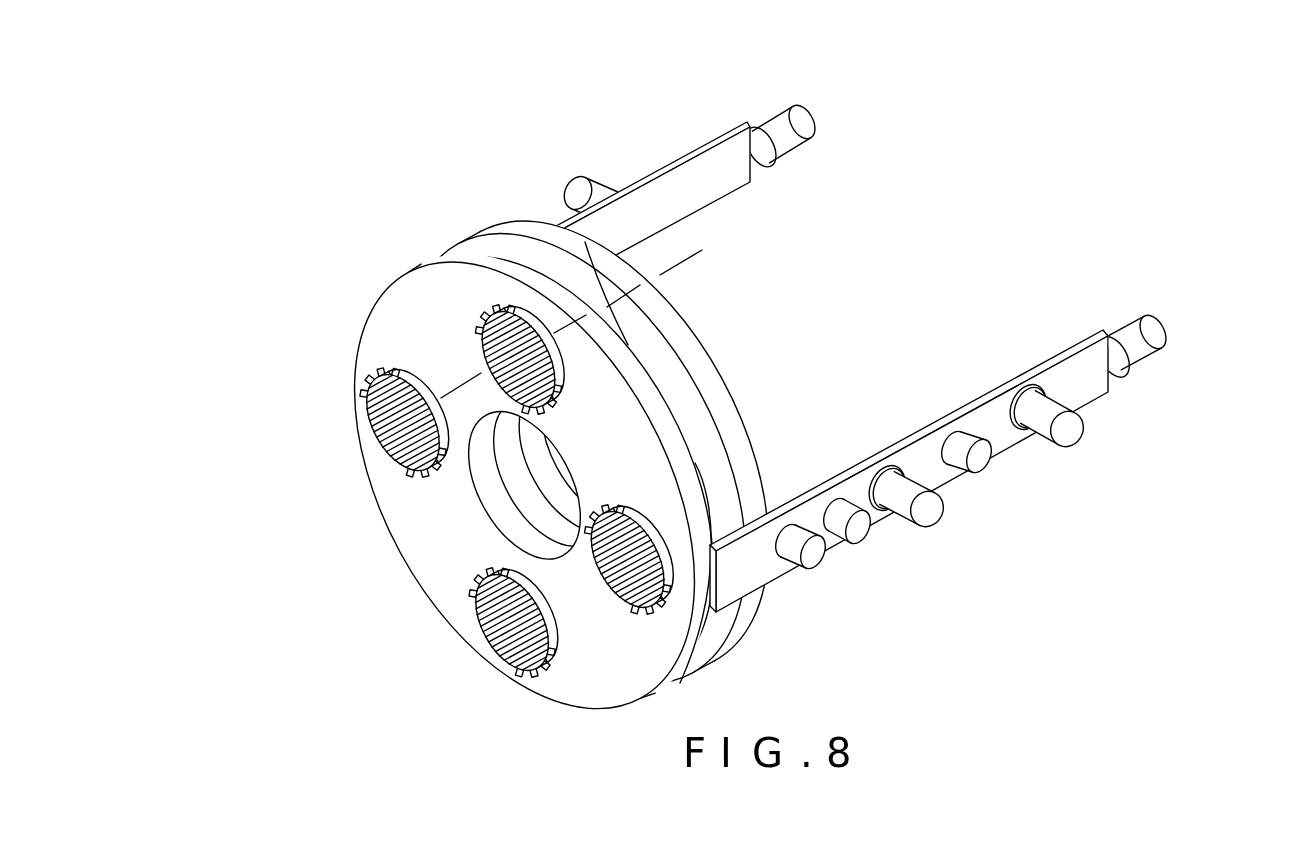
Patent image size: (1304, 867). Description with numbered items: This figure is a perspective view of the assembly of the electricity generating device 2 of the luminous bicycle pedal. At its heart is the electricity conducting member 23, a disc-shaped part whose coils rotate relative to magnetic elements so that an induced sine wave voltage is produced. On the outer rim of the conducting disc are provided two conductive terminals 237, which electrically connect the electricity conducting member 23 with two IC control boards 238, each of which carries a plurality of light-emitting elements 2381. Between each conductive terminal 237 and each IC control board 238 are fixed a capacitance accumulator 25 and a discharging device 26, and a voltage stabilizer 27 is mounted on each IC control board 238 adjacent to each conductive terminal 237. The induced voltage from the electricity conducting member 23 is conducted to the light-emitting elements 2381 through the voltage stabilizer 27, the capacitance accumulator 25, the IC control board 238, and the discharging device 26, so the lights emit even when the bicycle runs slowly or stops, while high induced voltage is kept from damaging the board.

The electricity generating device 2 is at (345, 105).
The electricity conducting member 23 is at (390, 252).
The conductive terminal 237 is at (778, 577).
The IC control board 238 is at (690, 153).
The light-emitting element 2381 is at (782, 120).
The capacitance accumulator 25 is at (858, 527).
The discharging device 26 is at (973, 458).
The voltage stabilizer 27 is at (810, 556).